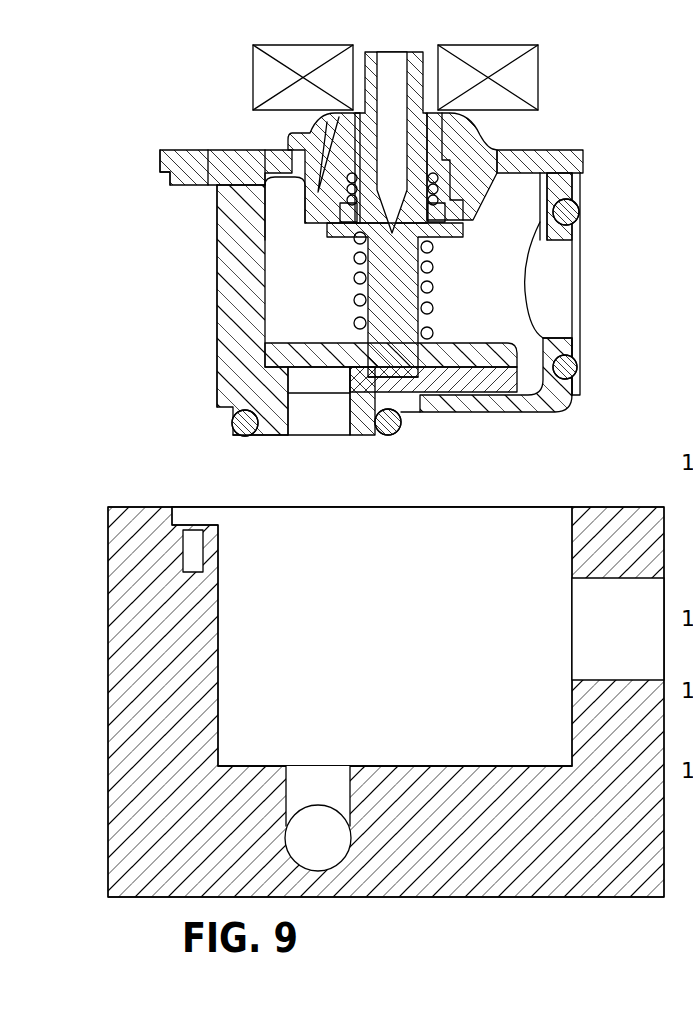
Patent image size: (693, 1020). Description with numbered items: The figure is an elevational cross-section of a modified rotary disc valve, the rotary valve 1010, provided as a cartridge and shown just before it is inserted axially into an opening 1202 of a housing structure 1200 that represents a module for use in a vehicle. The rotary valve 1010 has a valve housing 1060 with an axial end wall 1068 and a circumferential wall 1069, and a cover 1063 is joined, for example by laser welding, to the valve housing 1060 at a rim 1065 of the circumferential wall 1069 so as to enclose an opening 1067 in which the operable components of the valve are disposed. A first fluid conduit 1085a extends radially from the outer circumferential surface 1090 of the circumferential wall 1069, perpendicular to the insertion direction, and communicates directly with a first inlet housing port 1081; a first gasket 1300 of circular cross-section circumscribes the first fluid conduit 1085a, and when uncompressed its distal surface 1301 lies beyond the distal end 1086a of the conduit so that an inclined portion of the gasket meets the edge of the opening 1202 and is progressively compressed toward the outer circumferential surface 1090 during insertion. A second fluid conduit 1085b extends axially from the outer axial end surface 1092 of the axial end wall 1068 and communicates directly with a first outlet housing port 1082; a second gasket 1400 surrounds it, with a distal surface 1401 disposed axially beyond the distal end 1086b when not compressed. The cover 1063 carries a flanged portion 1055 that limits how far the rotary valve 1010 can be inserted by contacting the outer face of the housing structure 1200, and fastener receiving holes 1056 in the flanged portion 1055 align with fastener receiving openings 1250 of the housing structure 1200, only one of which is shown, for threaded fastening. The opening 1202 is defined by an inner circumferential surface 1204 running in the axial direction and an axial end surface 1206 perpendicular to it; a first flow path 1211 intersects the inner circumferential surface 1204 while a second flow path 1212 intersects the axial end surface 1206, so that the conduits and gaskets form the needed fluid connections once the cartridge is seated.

The rotary valve 1010 is at (368, 270).
The flanged portion 1055 is at (165, 152).
The fastener receiving holes 1056 is at (210, 175).
The valve housing 1060 is at (232, 296).
The cover 1063 is at (265, 157).
The rim 1065 is at (545, 185).
The opening 1067 is at (332, 276).
The axial end wall 1068 is at (487, 404).
The circumferential wall 1069 is at (528, 238).
The first inlet housing port 1081 is at (543, 340).
The first outlet housing port 1082 is at (295, 385).
The first fluid conduit 1085a is at (572, 372).
The second fluid conduit 1085b is at (232, 424).
The distal end of first fluid conduit 1086a is at (575, 350).
The distal end of second fluid conduit 1086b is at (362, 437).
The outer circumferential surface 1090 is at (214, 232).
The outer axial end surface 1092 is at (418, 414).
The first gasket 1300 is at (573, 190).
The distal surface 1301 is at (580, 222).
The second gasket 1400 is at (260, 436).
The distal surface 1401 is at (243, 440).
The housing structure 1200 is at (345, 662).
The opening 1202 is at (456, 540).
The inner circumferential surface 1204 is at (218, 612).
The axial end surface 1206 is at (447, 765).
The first flow path 1211 is at (608, 578).
The second flow path 1212 is at (286, 795).
The fastener receiving openings 1250 is at (200, 548).